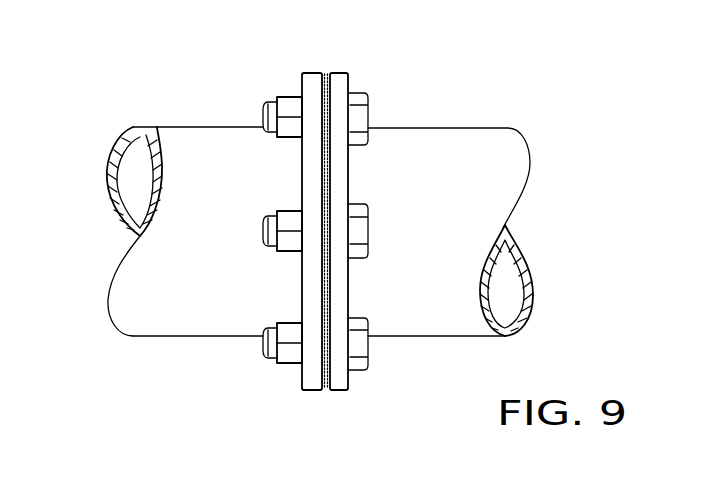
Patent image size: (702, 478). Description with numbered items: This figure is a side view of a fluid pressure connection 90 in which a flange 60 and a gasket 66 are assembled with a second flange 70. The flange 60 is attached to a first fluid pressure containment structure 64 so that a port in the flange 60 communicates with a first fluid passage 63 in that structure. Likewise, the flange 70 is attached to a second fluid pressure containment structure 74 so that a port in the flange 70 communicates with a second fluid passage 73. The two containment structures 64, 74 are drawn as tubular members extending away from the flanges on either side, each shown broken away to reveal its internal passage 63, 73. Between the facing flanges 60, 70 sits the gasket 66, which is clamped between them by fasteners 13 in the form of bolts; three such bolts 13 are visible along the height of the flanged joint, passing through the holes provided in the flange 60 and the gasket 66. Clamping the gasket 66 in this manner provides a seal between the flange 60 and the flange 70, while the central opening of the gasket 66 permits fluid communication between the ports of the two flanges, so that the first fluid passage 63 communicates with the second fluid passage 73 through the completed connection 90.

The fasteners 13 is at (367, 112).
The flange 60 is at (299, 81).
The first fluid passage 63 is at (132, 185).
The first fluid pressure containment structure 64 is at (200, 135).
The gasket 66 is at (332, 75).
The flange 70 is at (340, 76).
The second fluid passage 73 is at (510, 275).
The second fluid pressure containment structure 74 is at (472, 137).
The fluid pressure connection 90 is at (216, 353).